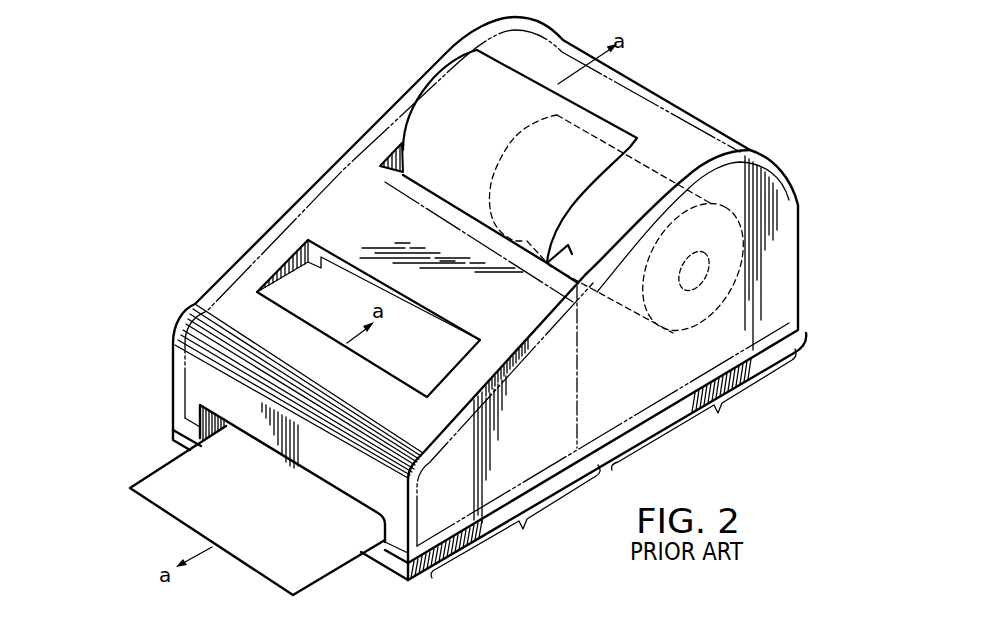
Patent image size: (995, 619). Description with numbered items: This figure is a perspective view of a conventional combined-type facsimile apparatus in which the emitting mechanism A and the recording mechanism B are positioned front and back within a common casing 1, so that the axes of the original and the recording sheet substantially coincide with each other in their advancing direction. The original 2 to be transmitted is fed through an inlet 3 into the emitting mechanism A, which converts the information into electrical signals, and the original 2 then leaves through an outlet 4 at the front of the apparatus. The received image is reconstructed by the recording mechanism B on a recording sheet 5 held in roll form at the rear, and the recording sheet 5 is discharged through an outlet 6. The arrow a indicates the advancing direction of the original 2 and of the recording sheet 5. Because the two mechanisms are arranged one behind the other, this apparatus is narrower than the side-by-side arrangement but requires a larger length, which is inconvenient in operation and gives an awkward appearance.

The common casing 1 is at (303, 213).
The original 2 is at (173, 507).
The inlet 3 is at (437, 329).
The outlet 4 is at (274, 469).
The recording sheet 5 is at (502, 78).
The outlet 6 is at (556, 243).
The emitting mechanism A is at (548, 551).
The recording mechanism B is at (740, 430).